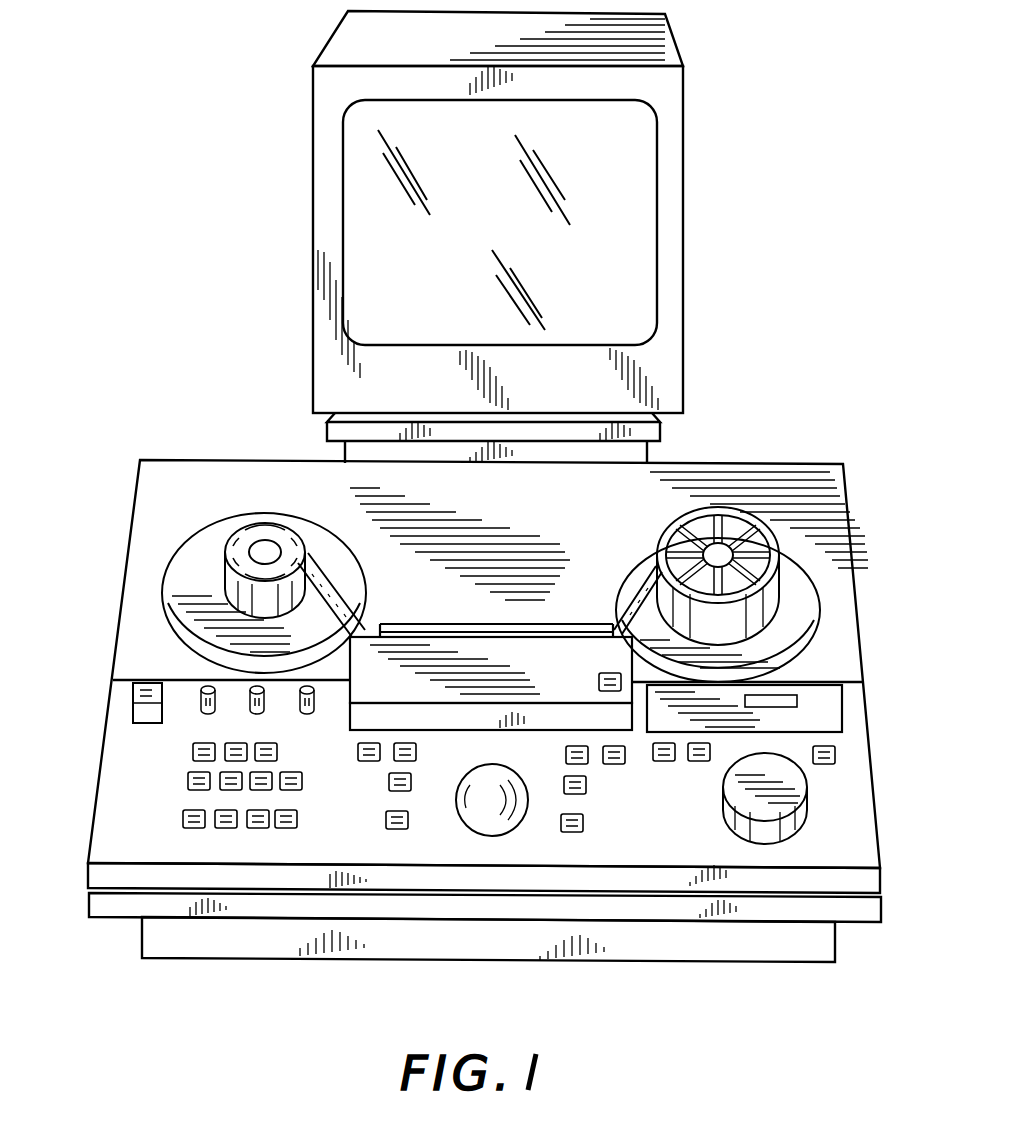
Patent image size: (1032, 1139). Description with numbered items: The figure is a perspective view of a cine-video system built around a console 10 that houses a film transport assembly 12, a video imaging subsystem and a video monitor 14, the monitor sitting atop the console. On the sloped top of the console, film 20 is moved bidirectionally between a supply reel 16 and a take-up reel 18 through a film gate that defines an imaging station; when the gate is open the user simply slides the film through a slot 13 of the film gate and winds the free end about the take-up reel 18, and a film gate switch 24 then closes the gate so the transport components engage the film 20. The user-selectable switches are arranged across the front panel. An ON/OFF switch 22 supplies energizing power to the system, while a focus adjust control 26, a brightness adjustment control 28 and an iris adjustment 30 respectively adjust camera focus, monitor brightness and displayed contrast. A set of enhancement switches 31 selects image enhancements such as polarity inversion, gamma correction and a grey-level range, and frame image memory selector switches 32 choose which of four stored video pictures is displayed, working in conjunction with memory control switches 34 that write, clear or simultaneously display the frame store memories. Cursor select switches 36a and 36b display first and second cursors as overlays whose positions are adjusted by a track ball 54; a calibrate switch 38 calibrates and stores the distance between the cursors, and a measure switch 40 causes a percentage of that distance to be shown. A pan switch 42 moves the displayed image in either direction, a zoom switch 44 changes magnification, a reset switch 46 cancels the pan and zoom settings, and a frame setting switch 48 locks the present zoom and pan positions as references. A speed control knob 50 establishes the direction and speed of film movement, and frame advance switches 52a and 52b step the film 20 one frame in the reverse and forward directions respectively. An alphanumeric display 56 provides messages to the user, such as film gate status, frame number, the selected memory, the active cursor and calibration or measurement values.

The console 10 is at (105, 493).
The film transport assembly 12 is at (505, 540).
The slot 13 is at (487, 630).
The video monitor 14 is at (683, 236).
The supply reel 16 is at (262, 548).
The take-up reel 18 is at (698, 550).
The film 20 is at (353, 618).
The ON/OFF switch 22 is at (133, 700).
The film gate switch 24 is at (600, 678).
The focus adjust control 26 is at (208, 708).
The brightness adjustment control 28 is at (257, 712).
The iris adjustment 30 is at (307, 712).
The enhancement switches 31 is at (180, 820).
The frame image memory selector switches 32 is at (184, 781).
The memory control switches 34 is at (184, 752).
The cursor select switch 36a is at (389, 783).
The cursor select switch 36b is at (386, 820).
The calibrate switch 38 is at (358, 752).
The measure switch 40 is at (416, 755).
The pan switch 42 is at (566, 752).
The zoom switch 44 is at (606, 766).
The reset switch 46 is at (564, 785).
The frame setting switch 48 is at (583, 822).
The speed control knob 50 is at (807, 800).
The frame advance switch 52a is at (665, 762).
The frame advance switch 52b is at (700, 762).
The track ball 54 is at (510, 822).
The alphanumeric display 56 is at (808, 685).